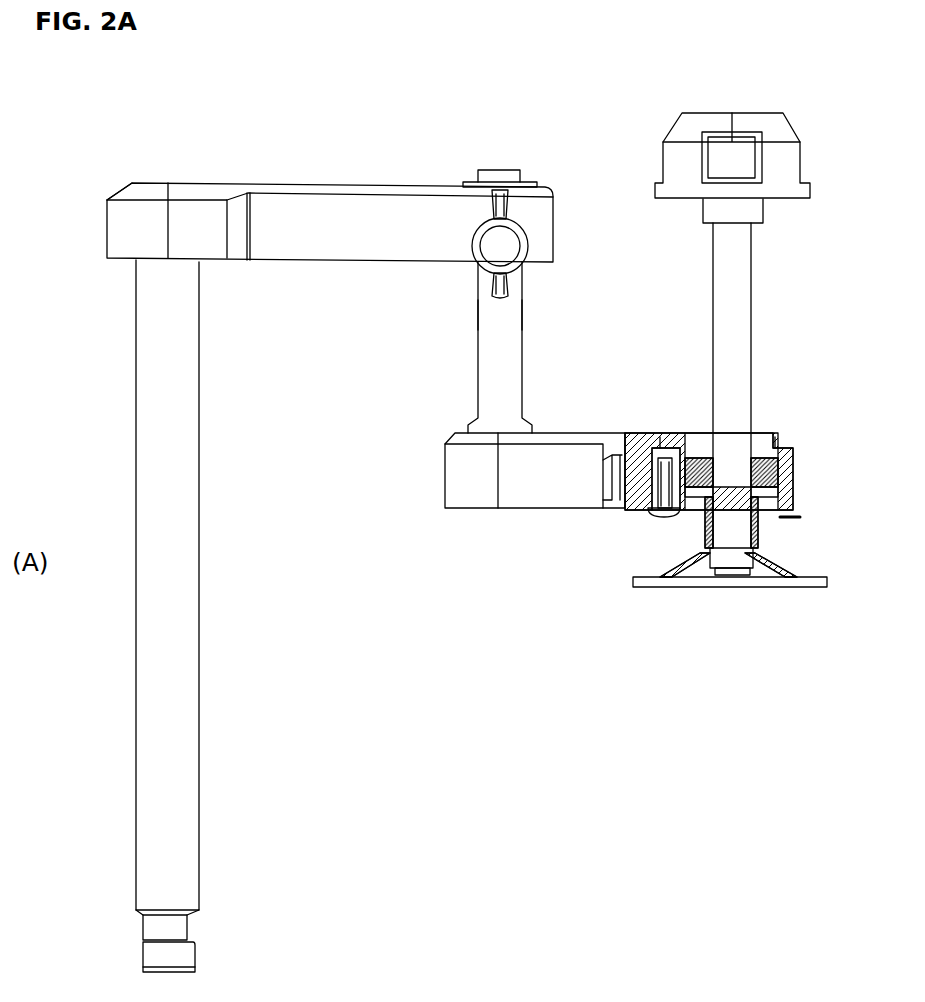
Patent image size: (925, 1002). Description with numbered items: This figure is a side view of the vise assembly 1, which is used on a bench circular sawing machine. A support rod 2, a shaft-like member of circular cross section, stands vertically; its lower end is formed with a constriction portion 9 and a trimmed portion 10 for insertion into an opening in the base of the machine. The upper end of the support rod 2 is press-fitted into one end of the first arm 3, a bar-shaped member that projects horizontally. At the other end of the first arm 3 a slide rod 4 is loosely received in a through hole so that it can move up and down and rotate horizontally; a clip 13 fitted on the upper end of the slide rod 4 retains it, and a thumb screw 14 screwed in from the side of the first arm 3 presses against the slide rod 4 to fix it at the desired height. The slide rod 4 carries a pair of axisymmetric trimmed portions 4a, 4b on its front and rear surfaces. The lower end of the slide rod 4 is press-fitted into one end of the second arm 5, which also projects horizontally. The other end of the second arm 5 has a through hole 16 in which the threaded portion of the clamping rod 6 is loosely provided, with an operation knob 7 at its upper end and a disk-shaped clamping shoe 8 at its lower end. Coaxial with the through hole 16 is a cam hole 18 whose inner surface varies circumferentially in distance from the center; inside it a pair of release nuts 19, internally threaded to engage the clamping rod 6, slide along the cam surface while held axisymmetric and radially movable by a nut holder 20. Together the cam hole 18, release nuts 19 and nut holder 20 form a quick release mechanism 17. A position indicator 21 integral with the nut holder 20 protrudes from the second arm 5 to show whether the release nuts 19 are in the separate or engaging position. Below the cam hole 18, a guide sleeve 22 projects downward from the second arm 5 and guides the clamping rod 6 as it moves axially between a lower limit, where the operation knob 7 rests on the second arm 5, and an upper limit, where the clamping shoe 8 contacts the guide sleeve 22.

The vise assembly 1 is at (569, 128).
The support rod 2 is at (182, 586).
The first arm 3 is at (362, 212).
The slide rod 4 is at (508, 352).
The trimmed portion 4a is at (522, 313).
The trimmed portion 4b is at (478, 315).
The second arm 5 is at (570, 455).
The clamping rod 6 is at (740, 325).
The operation knob 7 is at (790, 163).
The clamping shoe 8 is at (826, 582).
The constriction portion 9 is at (172, 925).
The trimmed portion 10 is at (143, 956).
The clip 13 is at (545, 186).
The thumb screw 14 is at (502, 247).
The through hole 16 is at (748, 422).
The quick release mechanism 17 is at (690, 512).
The cam hole 18 is at (795, 470).
The release nuts 19 is at (660, 437).
The nut holder 20 is at (772, 515).
The position indicator 21 is at (800, 517).
The guide sleeve 22 is at (706, 542).